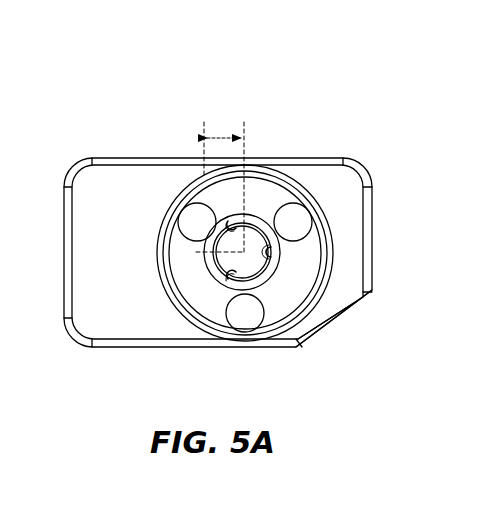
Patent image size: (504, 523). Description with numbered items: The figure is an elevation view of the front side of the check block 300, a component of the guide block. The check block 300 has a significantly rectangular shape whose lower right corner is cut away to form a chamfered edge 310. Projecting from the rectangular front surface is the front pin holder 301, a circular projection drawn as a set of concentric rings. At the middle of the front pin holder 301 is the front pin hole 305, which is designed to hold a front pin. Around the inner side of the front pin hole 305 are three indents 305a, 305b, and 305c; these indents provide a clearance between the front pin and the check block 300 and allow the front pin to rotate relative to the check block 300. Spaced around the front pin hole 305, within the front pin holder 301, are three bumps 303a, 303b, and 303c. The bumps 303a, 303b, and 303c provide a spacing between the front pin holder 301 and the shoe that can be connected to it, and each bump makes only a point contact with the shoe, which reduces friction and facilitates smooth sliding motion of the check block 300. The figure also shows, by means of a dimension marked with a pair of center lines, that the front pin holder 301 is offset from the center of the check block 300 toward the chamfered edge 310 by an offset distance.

The check block 300 is at (386, 131).
The front pin holder 301 is at (285, 161).
The bump 303a is at (311, 221).
The bump 303b is at (179, 218).
The bump 303c is at (227, 313).
The front pin hole 305 is at (281, 285).
The indent 305a is at (229, 222).
The indent 305b is at (231, 277).
The indent 305c is at (274, 252).
The chamfered edge 310 is at (333, 317).